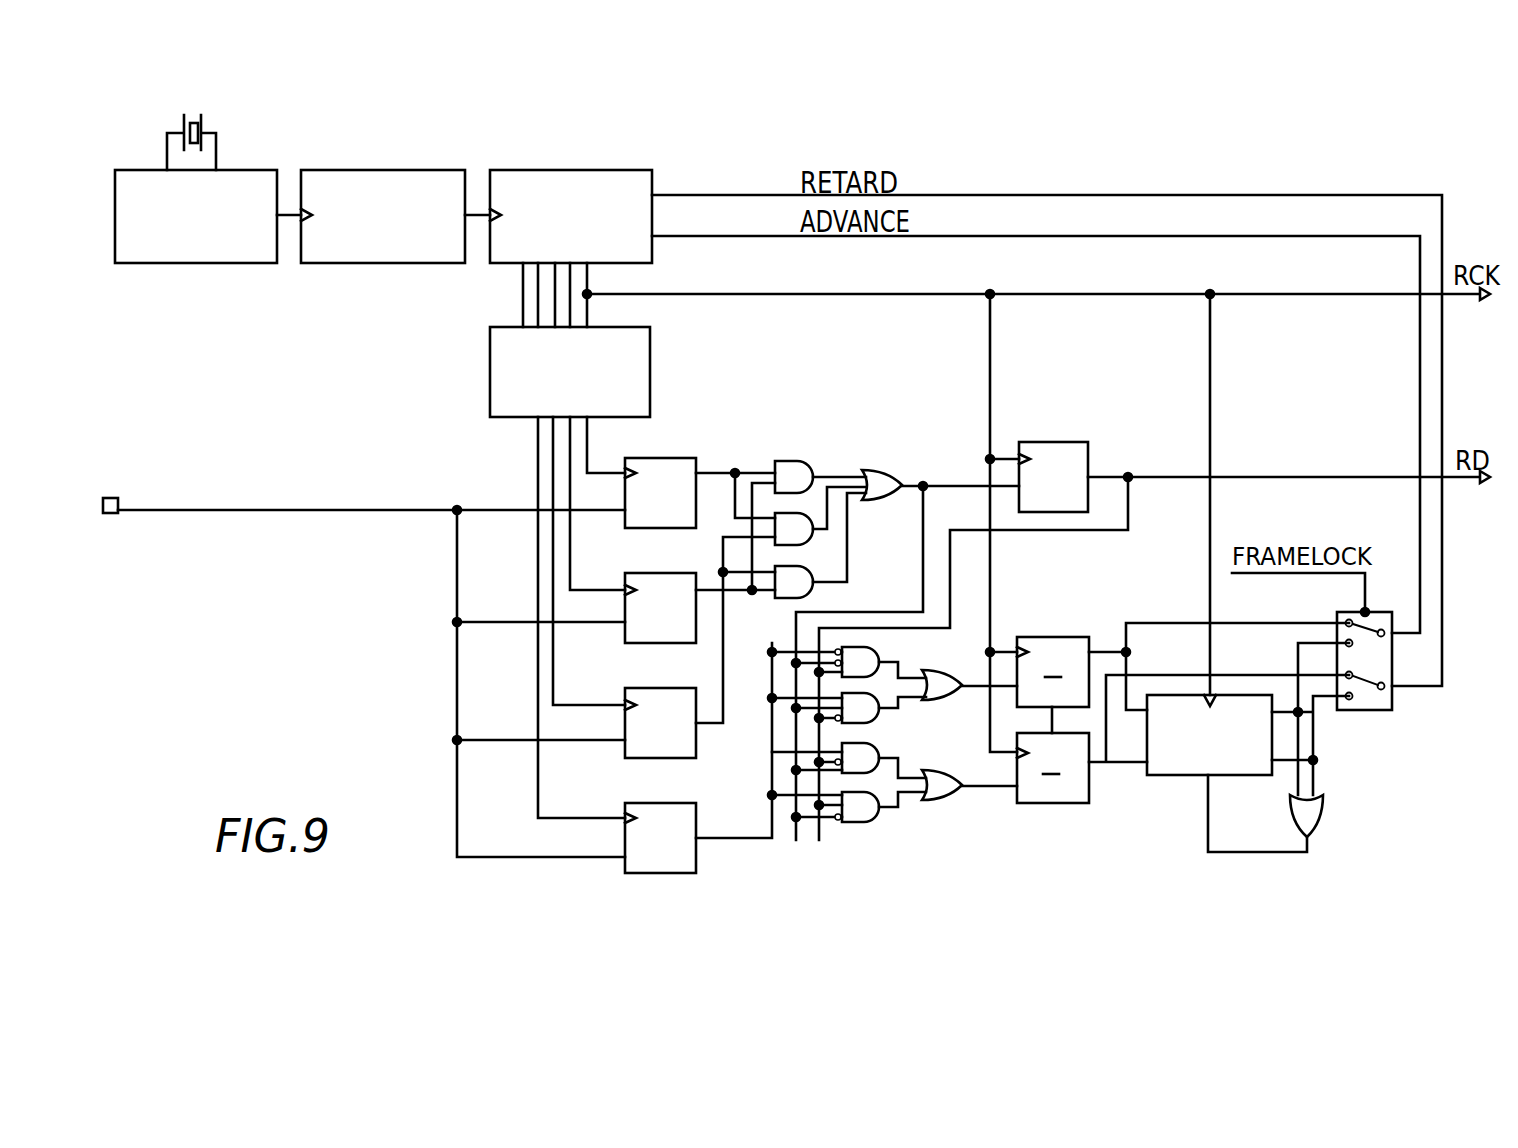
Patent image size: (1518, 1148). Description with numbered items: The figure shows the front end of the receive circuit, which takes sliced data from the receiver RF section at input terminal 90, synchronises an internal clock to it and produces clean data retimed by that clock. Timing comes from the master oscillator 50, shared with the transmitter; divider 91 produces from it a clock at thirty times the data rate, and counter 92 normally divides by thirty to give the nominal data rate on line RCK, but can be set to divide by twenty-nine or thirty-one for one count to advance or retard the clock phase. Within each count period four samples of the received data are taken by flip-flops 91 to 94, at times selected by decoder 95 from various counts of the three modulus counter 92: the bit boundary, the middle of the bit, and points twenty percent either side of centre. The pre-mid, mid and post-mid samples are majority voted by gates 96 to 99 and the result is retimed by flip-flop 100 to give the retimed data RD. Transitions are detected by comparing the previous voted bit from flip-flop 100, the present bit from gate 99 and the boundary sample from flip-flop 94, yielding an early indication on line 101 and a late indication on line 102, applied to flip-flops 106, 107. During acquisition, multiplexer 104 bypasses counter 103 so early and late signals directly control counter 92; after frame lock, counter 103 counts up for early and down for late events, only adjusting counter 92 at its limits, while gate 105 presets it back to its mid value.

The master oscillator 50 is at (210, 245).
The divider 91 is at (362, 190).
The three modulus counter 92 is at (550, 185).
The decoder 95 is at (520, 355).
The input terminal 90 is at (118, 515).
The flip-flop 93 is at (660, 733).
The flip-flop 94 is at (662, 843).
The gate 98 is at (793, 475).
The gate 96 is at (793, 590).
The gate 99 is at (883, 492).
The flip-flop 100 is at (1053, 465).
The early line 101 is at (979, 690).
The late line 102 is at (986, 788).
The flip-flop 106 is at (1050, 645).
The flip-flop 107 is at (1078, 793).
The counter 103 is at (1220, 770).
The multiplexer 104 is at (1380, 700).
The gate 105 is at (1310, 808).